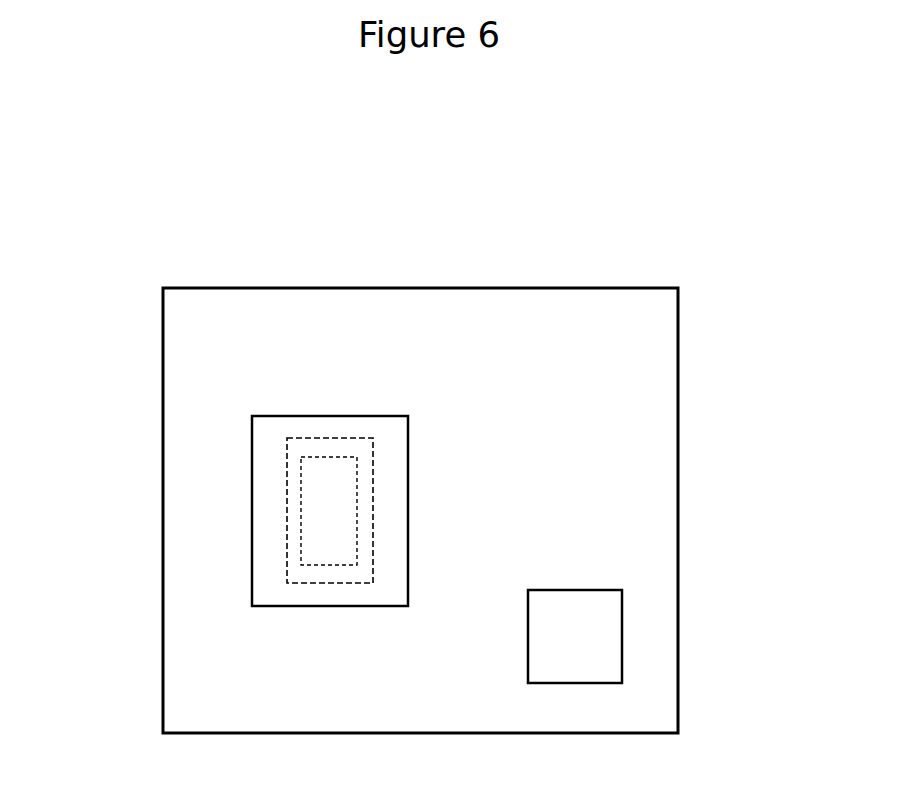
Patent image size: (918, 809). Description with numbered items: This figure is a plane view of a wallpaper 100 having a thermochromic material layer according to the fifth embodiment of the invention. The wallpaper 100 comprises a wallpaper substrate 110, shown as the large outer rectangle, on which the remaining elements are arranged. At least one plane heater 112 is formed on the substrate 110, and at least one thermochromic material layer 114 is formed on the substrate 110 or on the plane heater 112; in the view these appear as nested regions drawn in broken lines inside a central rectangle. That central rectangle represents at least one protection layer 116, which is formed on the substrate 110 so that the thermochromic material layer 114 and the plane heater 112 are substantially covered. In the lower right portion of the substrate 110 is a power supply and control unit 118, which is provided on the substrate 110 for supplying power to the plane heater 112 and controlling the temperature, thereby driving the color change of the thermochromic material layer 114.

The wallpaper 100 is at (702, 213).
The wallpaper substrate 110 is at (263, 315).
The plane heater 112 is at (348, 438).
The thermochromic material layer 114 is at (301, 516).
The protection layer 116 is at (299, 416).
The power supply and control unit 118 is at (622, 630).